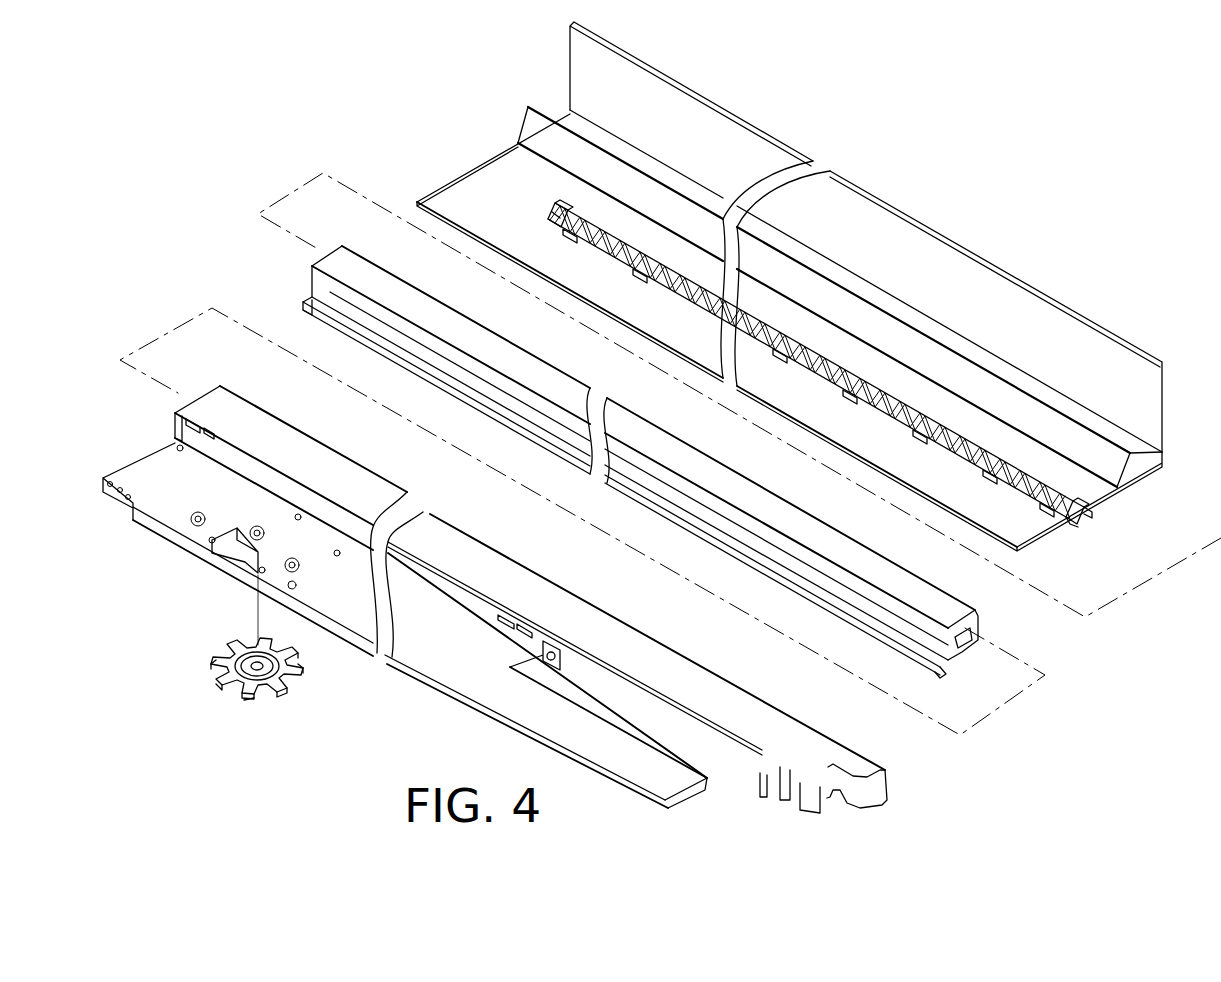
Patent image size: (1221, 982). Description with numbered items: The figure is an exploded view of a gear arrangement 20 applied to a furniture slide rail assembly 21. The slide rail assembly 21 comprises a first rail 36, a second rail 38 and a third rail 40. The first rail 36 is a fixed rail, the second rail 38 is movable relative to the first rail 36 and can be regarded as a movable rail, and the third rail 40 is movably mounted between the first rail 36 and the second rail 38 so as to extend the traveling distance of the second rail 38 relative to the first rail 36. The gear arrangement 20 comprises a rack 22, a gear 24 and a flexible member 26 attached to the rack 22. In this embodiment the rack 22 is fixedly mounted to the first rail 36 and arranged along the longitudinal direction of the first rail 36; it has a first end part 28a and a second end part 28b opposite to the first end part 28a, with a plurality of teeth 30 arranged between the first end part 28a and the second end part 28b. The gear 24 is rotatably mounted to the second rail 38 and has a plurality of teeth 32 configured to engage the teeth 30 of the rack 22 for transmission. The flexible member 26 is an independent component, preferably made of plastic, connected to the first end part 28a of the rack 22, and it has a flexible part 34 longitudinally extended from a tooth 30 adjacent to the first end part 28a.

The gear arrangement 20 is at (247, 720).
The slide rail assembly 21 is at (160, 113).
The rack 22 is at (537, 208).
The gear 24 is at (243, 654).
The flexible member 26 is at (1087, 494).
The first end part 28a is at (1068, 494).
The second end part 28b is at (556, 210).
The teeth 30 is at (649, 258).
The teeth 32 is at (215, 664).
The flexible part 34 is at (1072, 502).
The first rail 36 is at (546, 99).
The second rail 38 is at (128, 425).
The third rail 40 is at (310, 283).